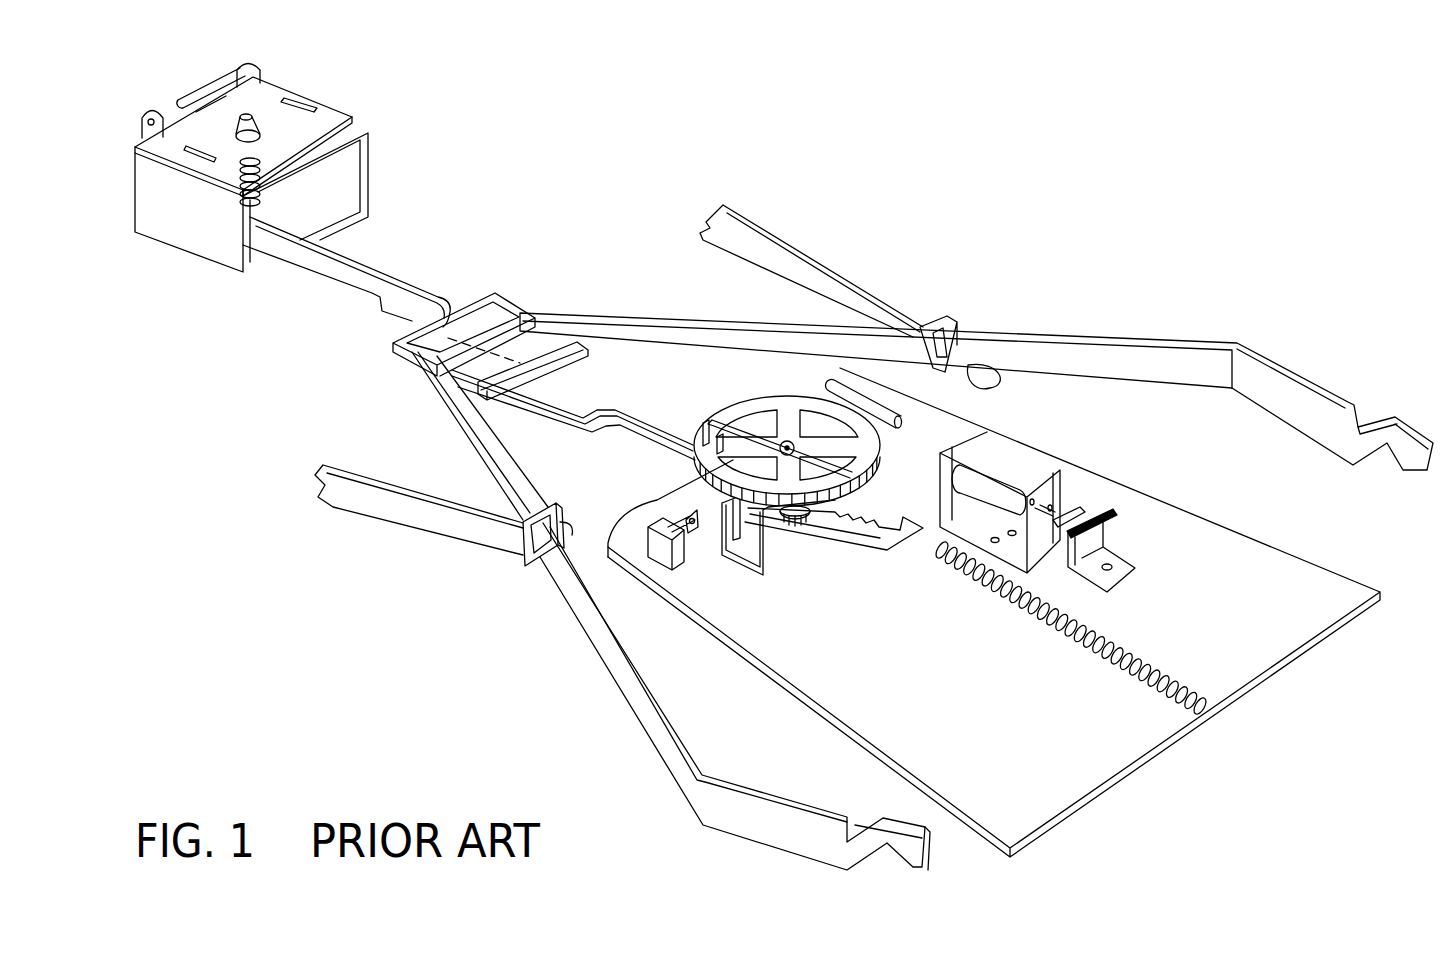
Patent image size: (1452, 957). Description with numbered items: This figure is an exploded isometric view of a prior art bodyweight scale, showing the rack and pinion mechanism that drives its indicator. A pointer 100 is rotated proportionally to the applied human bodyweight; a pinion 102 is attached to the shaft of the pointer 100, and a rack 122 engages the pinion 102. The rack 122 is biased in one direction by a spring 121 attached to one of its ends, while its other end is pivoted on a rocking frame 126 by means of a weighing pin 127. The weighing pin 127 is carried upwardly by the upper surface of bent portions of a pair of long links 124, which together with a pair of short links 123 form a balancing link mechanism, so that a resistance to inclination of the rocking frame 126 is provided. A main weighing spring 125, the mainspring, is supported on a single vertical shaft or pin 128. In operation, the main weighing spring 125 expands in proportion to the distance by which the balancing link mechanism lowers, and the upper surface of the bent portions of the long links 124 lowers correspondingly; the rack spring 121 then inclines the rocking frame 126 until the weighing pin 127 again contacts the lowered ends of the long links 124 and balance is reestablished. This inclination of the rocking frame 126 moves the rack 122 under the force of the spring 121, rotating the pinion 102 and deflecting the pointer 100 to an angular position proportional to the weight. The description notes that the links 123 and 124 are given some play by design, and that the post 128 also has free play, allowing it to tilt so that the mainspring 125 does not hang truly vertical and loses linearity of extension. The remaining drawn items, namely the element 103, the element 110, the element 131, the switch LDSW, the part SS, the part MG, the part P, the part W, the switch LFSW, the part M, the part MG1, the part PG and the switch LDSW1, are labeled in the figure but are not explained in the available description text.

The pointer 100 is at (862, 468).
The pinion 102 is at (803, 535).
The base plate lever 103 is at (680, 465).
The pin 110 is at (712, 415).
The spring 121 is at (1095, 660).
The rack 122 is at (880, 542).
The short links 123 is at (807, 257).
The long links 124 is at (190, 100).
The main weighing spring 125 is at (350, 248).
The rocking frame 126 is at (218, 250).
The weighing pin 127 is at (236, 85).
The vertical shaft or pin 128 is at (257, 115).
The lever 131 is at (862, 499).
The limit switch LDSW is at (707, 422).
The stop SS is at (703, 433).
The magnet MG is at (670, 456).
The plunger P is at (718, 514).
The wire W is at (863, 393).
The switch LFSW is at (692, 532).
The motor M is at (1005, 470).
The magnet MG1 is at (1075, 510).
The pickup gear PG is at (1110, 515).
The limit switch LDSW1 is at (1118, 534).